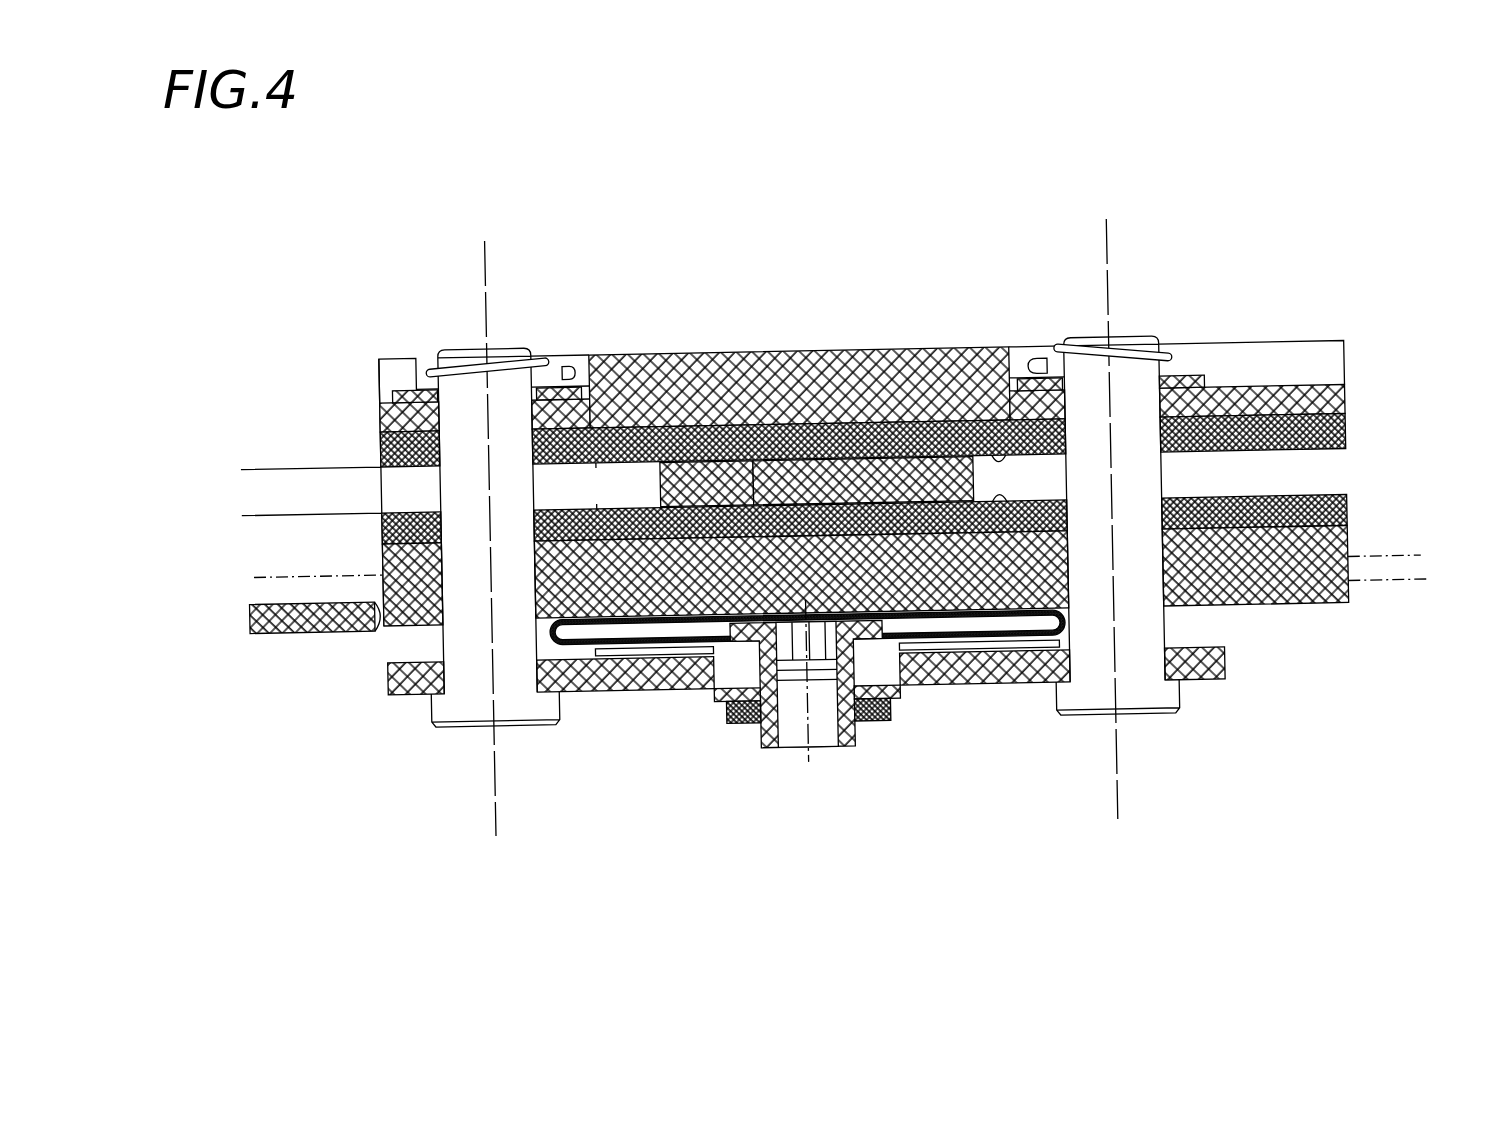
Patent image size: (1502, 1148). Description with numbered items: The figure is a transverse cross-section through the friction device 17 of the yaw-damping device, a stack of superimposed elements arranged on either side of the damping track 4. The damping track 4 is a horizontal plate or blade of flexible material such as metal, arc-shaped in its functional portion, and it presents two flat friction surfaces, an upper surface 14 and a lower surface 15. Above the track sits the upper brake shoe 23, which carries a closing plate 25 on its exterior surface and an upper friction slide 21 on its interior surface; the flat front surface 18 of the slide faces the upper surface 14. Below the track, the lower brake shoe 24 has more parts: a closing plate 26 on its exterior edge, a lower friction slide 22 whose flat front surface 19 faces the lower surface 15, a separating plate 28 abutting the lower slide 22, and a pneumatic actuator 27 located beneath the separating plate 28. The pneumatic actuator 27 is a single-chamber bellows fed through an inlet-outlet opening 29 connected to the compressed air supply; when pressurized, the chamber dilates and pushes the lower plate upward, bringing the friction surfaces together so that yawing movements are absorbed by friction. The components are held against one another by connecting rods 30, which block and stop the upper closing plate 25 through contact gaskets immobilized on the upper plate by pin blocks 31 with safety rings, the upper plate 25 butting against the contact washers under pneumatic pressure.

The damping track 4 is at (849, 468).
The upper surface 14 is at (660, 455).
The lower surface 15 is at (757, 480).
The friction device 17 is at (1080, 833).
The flat front surface 18 is at (1000, 430).
The flat front surface 19 is at (1030, 653).
The upper friction slide 21 is at (1350, 432).
The lower friction slide 22 is at (1352, 505).
The upper brake shoe 23 is at (350, 428).
The lower brake shoe 24 is at (350, 553).
The closing plate 25 is at (1352, 396).
The closing plate 26 is at (1232, 664).
The pneumatic actuator 27 is at (568, 648).
The separating plate 28 is at (1352, 548).
The inlet-outlet opening 29 is at (803, 750).
The connecting rods 30 is at (482, 735).
The pin blocks 31 is at (552, 375).